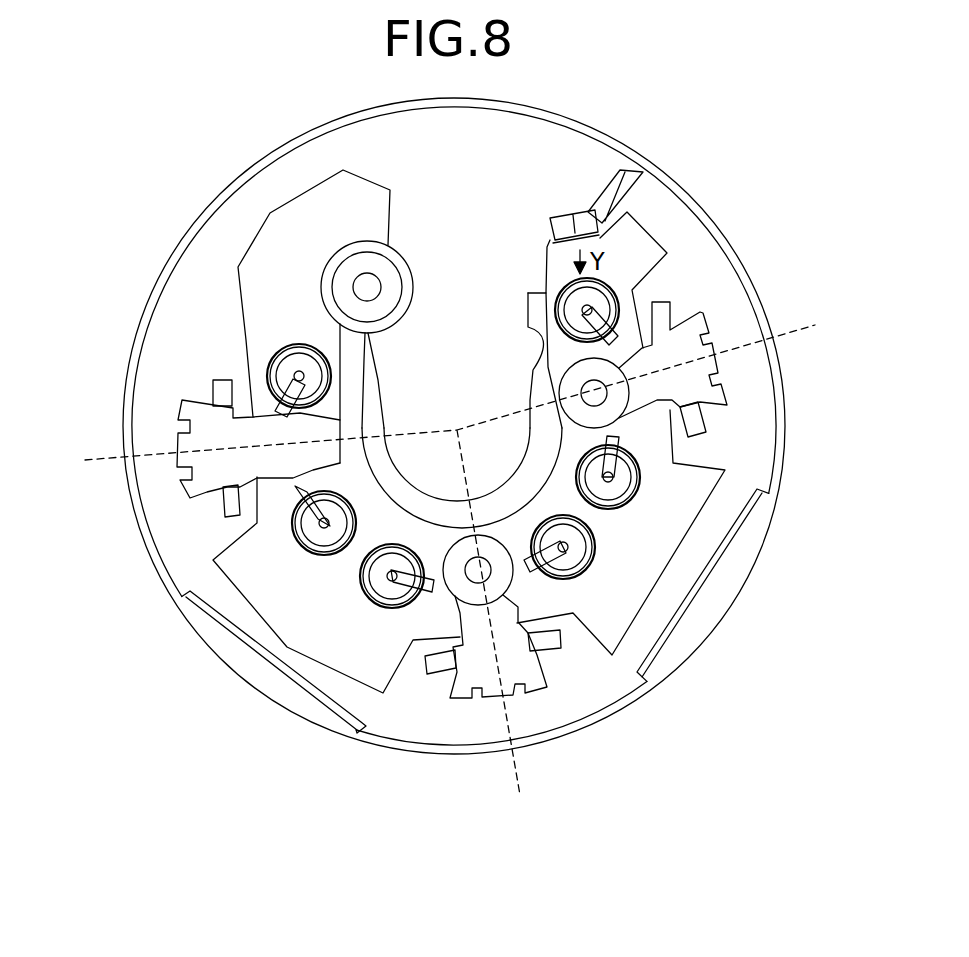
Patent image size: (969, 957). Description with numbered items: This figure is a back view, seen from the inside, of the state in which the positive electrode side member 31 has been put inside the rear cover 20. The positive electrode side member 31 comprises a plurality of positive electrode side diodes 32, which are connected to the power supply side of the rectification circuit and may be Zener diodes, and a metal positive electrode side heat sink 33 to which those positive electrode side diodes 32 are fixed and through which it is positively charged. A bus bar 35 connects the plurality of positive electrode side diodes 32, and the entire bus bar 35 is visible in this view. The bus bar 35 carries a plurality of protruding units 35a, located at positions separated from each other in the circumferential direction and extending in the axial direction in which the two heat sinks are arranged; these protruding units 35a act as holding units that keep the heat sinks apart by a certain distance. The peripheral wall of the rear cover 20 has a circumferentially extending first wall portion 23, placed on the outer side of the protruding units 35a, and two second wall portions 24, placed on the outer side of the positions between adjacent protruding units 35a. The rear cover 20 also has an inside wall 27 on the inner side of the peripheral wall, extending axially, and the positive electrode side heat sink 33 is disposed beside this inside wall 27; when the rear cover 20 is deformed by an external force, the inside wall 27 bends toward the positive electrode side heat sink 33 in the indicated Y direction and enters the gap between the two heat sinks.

The rear cover 20 is at (680, 187).
The first wall portion 23 is at (784, 458).
The second wall portions 24 is at (727, 547).
The inside wall 27 is at (573, 214).
The positive electrode side member 31 is at (653, 243).
The positive electrode side diodes 32 is at (333, 492).
The positive electrode side heat sink 33 is at (546, 256).
The bus bar 35 is at (528, 297).
The protruding units 35a is at (730, 396).